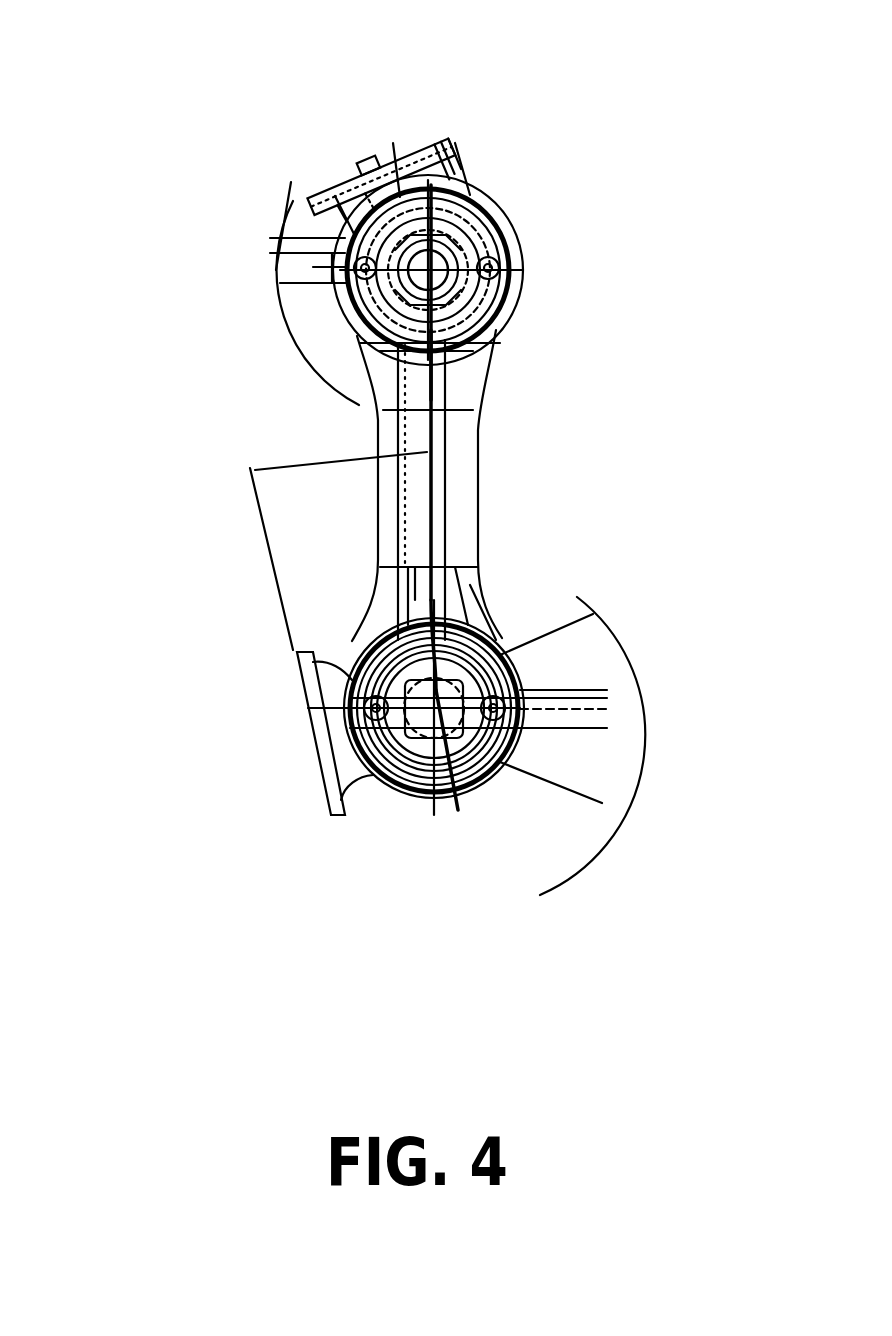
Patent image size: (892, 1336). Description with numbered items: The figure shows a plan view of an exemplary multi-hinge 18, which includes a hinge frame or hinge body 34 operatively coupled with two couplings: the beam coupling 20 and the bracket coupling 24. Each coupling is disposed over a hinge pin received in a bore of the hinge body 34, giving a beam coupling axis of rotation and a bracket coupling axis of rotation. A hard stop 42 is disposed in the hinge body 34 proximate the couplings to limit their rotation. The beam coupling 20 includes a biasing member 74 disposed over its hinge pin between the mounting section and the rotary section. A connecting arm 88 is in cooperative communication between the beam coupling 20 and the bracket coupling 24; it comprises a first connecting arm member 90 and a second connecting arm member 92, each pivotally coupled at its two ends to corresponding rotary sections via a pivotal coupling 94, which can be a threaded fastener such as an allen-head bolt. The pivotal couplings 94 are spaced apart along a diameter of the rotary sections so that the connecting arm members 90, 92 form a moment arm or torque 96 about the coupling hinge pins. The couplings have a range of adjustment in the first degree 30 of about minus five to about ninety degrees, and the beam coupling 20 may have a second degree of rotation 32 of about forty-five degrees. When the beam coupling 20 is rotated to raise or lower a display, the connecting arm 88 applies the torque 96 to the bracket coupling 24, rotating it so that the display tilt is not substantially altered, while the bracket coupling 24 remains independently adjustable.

The multi-hinge 18 is at (400, 502).
The beam coupling 20 is at (393, 830).
The bracket coupling 24 is at (486, 158).
The first degree 30 is at (290, 333).
The second degree of rotation 32 is at (607, 675).
The hinge body 34 is at (476, 470).
The hard stop 42 is at (372, 752).
The biasing member 74 is at (440, 735).
The connecting arm 88 is at (418, 403).
The first connecting arm member 90 is at (392, 502).
The second connecting arm member 92 is at (434, 522).
The pivotal coupling 94 is at (352, 262).
The torque 96 is at (540, 318).